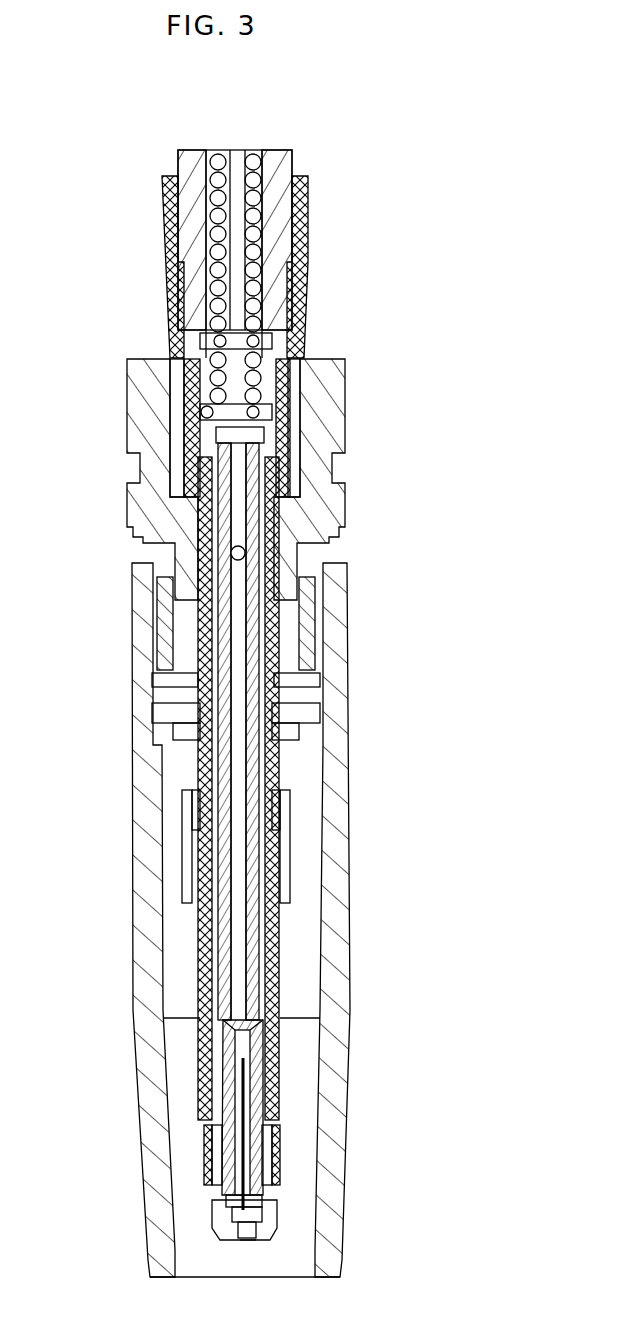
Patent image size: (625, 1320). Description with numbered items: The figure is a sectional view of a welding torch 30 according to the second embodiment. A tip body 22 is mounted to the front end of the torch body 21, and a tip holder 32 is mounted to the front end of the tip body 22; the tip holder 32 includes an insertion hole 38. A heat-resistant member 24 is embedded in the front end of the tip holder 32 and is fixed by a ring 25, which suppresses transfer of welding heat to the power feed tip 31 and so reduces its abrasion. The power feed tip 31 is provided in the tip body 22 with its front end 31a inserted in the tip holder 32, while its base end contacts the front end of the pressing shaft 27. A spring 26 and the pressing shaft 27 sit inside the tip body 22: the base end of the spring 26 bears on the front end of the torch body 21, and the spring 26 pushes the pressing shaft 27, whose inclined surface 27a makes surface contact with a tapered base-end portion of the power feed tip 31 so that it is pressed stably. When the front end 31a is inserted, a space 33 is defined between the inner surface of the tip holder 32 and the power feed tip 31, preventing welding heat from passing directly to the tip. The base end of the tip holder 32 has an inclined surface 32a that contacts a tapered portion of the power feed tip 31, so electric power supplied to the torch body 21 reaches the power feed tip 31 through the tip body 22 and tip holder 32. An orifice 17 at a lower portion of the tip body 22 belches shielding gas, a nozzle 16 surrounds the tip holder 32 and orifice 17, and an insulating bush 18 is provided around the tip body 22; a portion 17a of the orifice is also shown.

The nozzle 16 is at (338, 932).
The orifice 17 is at (300, 722).
The guide portion 17a is at (295, 810).
The insulating bush 18 is at (325, 440).
The torch body 21 is at (277, 193).
The tip body 22 is at (297, 325).
The heat-resistant member 24 is at (262, 1220).
The ring 25 is at (240, 1228).
The spring 26 is at (247, 410).
The pressing shaft 27 is at (250, 545).
The inclined surface 27a is at (247, 1025).
The welding torch 30 is at (425, 157).
The power feed tip 31 is at (257, 1063).
The front end of the power feed tip 31a is at (266, 1214).
The tip holder 32 is at (272, 1188).
The inclined surface 32a is at (278, 1133).
The space 33 is at (236, 1214).
The insertion hole 38 is at (247, 1250).